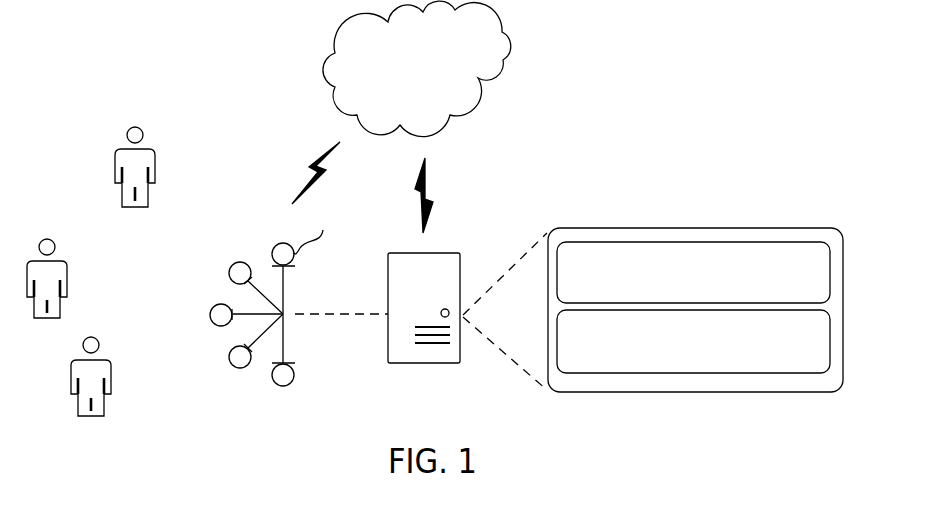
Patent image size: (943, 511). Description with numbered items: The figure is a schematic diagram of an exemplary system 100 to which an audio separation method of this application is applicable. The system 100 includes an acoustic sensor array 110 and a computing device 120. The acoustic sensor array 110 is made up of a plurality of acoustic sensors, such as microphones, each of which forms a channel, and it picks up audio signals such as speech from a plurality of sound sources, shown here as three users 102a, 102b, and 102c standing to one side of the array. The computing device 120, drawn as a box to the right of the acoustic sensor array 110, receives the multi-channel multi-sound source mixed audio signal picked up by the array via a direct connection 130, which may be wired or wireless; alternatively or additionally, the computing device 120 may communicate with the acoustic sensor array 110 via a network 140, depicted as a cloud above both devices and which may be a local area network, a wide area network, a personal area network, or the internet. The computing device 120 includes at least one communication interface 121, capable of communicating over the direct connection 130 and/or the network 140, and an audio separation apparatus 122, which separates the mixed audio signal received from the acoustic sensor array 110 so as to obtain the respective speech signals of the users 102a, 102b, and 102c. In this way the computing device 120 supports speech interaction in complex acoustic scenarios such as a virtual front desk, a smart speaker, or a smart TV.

The system 100 is at (76, 33).
The user 102a is at (156, 150).
The user 102b is at (67, 260).
The user 102c is at (112, 359).
The acoustic sensor array 110 is at (213, 265).
The computing device 120 is at (452, 252).
The communication interface 121 is at (707, 362).
The audio separation apparatus 122 is at (763, 299).
The direct connection 130 is at (316, 311).
The network 140 is at (437, 82).